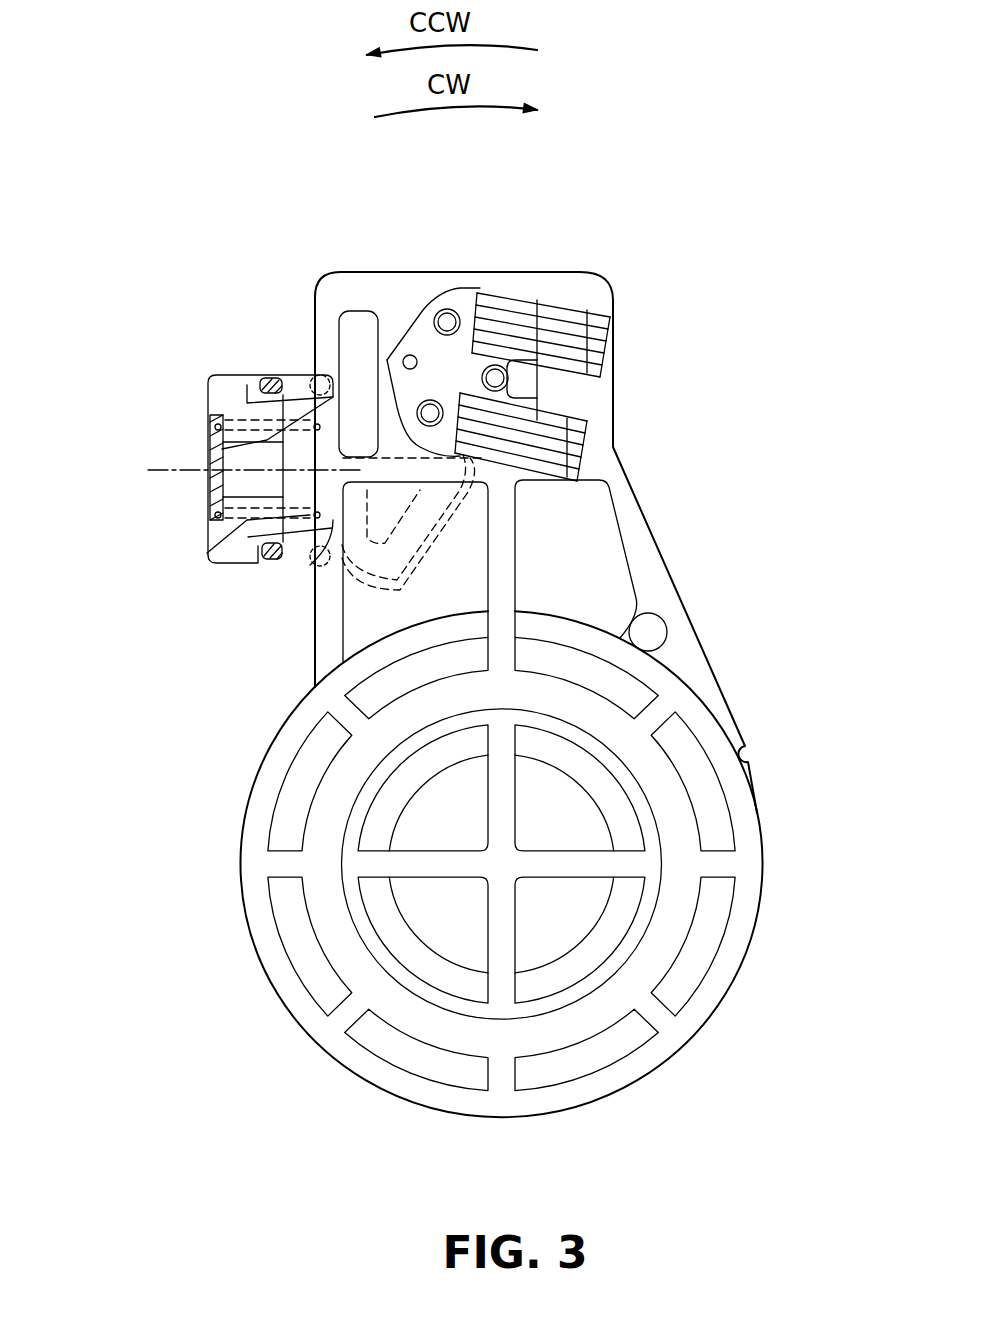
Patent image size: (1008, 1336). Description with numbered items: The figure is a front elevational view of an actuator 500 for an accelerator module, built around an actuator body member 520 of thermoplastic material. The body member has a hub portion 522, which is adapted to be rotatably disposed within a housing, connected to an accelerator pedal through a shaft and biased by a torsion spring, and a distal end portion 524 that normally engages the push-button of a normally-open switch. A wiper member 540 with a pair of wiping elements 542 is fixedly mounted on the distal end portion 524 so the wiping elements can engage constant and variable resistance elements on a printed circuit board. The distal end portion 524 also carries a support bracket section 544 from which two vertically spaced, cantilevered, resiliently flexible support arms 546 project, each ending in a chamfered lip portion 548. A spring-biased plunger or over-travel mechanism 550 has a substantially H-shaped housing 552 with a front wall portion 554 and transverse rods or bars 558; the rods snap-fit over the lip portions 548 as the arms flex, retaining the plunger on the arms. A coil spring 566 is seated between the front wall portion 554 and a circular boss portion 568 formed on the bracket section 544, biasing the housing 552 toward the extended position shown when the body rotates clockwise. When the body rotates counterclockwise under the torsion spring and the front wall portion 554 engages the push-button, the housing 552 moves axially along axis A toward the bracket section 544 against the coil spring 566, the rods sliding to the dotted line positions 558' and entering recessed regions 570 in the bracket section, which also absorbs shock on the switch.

The actuator 500 is at (790, 393).
The actuator body member 520 is at (714, 668).
The hub portion 522 is at (755, 815).
The distal end portion 524 is at (618, 370).
The wiper member 540 is at (428, 312).
The wiping elements 542 is at (605, 312).
The support bracket section 544 is at (325, 568).
The support arms 546 is at (320, 375).
The lip portion 548 is at (262, 374).
The plunger mechanism 550 is at (185, 378).
The housing 552 is at (208, 396).
The front wall portion 554 is at (212, 490).
The rods or bars 558 is at (231, 399).
The dotted line positions of rods or bars 558' is at (334, 439).
The coil spring 566 is at (248, 520).
The circular boss portion 568 is at (333, 398).
The recessed regions 570 is at (243, 442).
The axis A is at (242, 469).